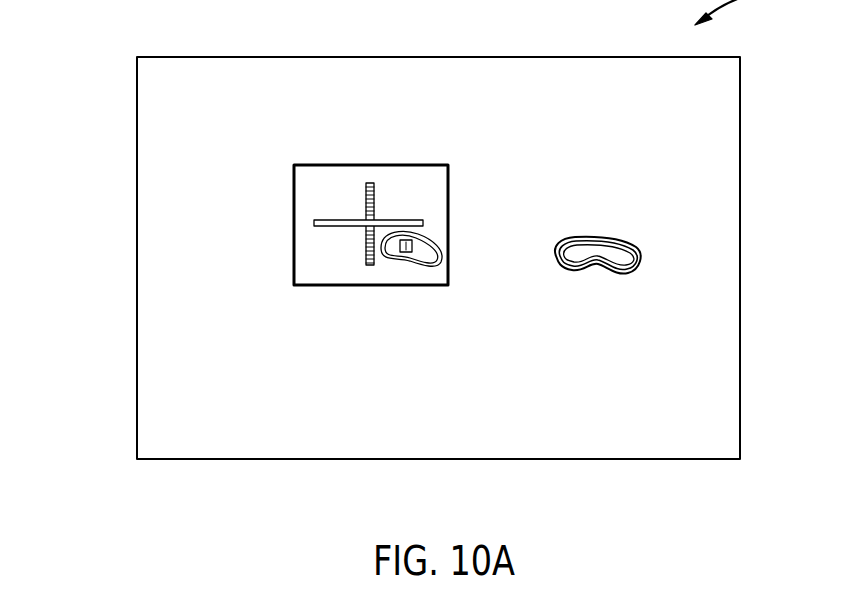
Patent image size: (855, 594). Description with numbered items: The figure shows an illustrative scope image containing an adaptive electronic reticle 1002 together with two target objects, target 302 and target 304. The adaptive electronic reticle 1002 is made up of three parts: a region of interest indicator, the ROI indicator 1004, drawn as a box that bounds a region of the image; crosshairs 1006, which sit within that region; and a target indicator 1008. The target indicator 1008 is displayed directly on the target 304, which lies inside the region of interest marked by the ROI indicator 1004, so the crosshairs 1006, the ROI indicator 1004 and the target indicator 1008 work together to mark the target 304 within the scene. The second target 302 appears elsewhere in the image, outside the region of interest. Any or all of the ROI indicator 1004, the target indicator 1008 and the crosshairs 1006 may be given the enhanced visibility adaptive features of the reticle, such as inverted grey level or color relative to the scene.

The target 302 is at (608, 250).
The target 304 is at (436, 262).
The adaptive electronic reticle 1002 is at (284, 217).
The ROI indicator 1004 is at (294, 255).
The crosshairs 1006 is at (366, 258).
The target indicator 1008 is at (405, 252).